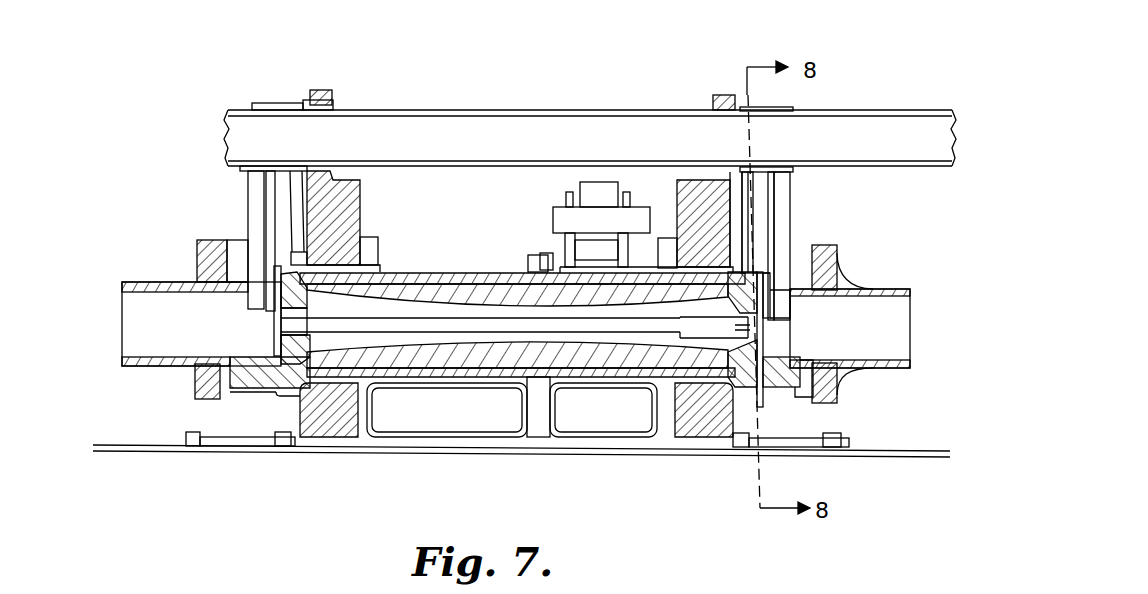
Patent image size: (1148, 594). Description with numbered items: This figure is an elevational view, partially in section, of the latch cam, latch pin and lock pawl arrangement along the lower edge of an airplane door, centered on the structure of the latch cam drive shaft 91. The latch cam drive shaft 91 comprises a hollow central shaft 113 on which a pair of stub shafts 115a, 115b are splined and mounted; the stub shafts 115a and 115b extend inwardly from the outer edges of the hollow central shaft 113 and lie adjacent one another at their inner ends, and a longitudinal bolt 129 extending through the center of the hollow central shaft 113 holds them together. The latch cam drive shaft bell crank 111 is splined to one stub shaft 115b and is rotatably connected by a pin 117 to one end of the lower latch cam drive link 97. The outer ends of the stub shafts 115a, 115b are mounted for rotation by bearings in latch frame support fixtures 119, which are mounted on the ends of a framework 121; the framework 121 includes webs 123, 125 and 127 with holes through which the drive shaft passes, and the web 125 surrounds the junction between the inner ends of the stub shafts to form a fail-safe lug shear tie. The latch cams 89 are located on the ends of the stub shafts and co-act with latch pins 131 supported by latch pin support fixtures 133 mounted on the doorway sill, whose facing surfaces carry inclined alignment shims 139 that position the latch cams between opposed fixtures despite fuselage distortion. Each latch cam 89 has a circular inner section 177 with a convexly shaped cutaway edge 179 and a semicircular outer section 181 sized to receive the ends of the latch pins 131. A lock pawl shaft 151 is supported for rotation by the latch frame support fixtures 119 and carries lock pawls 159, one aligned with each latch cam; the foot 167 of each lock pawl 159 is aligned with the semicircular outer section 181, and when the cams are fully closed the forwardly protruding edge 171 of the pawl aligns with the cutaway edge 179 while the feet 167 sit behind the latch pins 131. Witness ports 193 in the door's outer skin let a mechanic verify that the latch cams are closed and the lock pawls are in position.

The latch cam 89 is at (279, 405).
The latch cam drive shaft 91 is at (420, 382).
The lower latch cam drive link 97 is at (592, 183).
The latch cam drive shaft bell crank 111 is at (560, 220).
The hollow central shaft 113 is at (448, 290).
The stub shaft 115a is at (450, 377).
The stub shaft 115b is at (600, 372).
The pin 117 is at (553, 217).
The latch frame support fixture 119 is at (360, 183).
The framework 121 is at (585, 442).
The web 123 is at (380, 247).
The web 125 is at (532, 263).
The web 127 is at (663, 243).
The longitudinal bolt 129 is at (330, 385).
The latch pin 131 is at (128, 308).
The latch pin support fixture 133 is at (175, 280).
The alignment shim 139 is at (293, 263).
The lock pawl shaft 151 is at (355, 114).
The lock pawl 159 is at (253, 178).
The foot 167 is at (233, 366).
The forwardly protruding edge 171 is at (283, 258).
The inner section 177 is at (282, 308).
The convexly shaped cutaway edge 179 is at (282, 285).
The outer section 181 is at (228, 400).
The witness port 193 is at (240, 452).